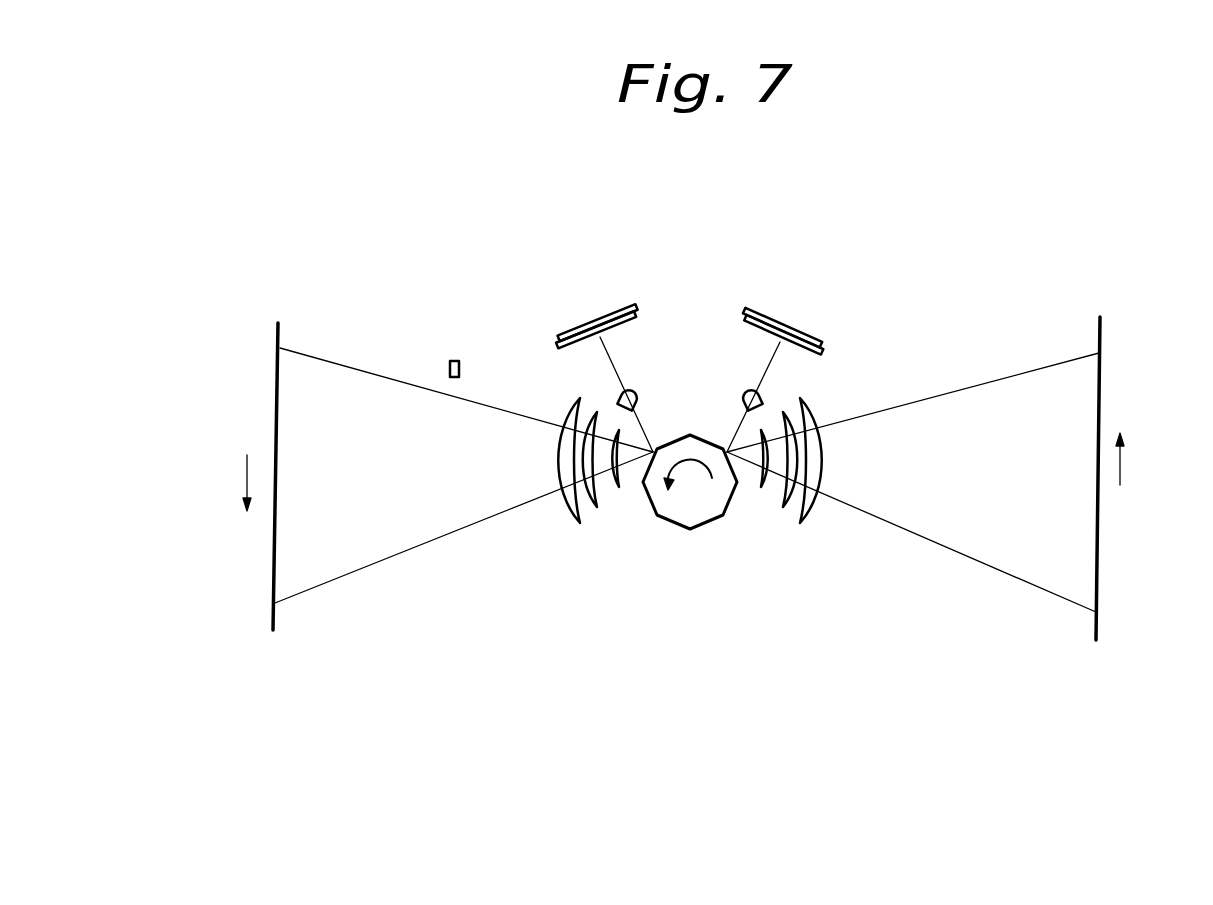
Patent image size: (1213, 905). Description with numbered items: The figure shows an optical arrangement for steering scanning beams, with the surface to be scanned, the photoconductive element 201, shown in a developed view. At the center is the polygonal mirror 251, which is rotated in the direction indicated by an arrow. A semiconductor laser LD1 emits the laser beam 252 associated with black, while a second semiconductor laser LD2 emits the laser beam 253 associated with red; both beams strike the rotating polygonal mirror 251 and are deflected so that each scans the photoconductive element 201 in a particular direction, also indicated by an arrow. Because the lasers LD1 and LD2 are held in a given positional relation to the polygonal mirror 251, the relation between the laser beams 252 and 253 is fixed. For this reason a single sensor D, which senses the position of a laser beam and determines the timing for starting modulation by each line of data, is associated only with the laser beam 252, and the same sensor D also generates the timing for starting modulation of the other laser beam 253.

The photoconductive element 201 is at (273, 564).
The polygonal mirror 251 is at (677, 512).
The laser beam 252 is at (430, 543).
The laser beam 253 is at (958, 557).
The semiconductor laser LD1 is at (603, 364).
The semiconductor laser LD2 is at (776, 370).
The sensor D is at (398, 373).